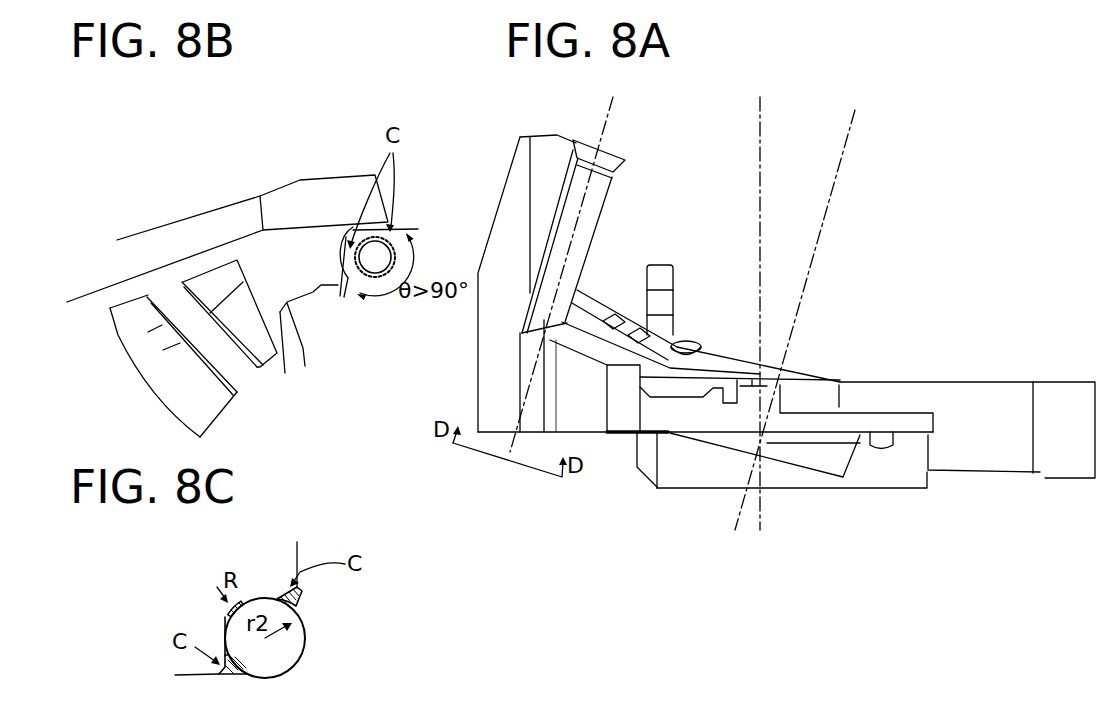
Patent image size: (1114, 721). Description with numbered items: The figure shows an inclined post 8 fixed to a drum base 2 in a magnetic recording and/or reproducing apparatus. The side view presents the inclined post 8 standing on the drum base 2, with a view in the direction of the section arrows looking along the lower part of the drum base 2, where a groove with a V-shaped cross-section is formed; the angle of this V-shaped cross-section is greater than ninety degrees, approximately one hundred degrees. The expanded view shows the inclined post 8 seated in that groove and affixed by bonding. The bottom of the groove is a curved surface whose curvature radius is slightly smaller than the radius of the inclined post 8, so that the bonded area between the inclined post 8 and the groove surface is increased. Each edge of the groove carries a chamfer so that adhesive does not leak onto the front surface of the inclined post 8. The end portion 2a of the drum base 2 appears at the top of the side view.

In FIG. 8B, the drum base 2 is at (303, 205).
In FIG. 8A, the drum base 2 is at (545, 135).
In FIG. 8C, the drum base 2 is at (297, 548).
In FIG. 8A, the end portion of holding plate 2a is at (615, 158).
In FIG. 8B, the inclined post 8 is at (376, 277).
In FIG. 8A, the inclined post 8 is at (588, 218).
In FIG. 8C, the inclined post 8 is at (292, 647).